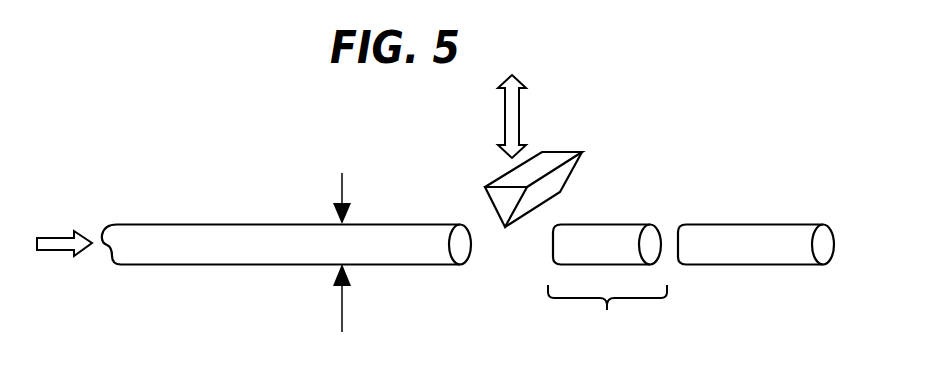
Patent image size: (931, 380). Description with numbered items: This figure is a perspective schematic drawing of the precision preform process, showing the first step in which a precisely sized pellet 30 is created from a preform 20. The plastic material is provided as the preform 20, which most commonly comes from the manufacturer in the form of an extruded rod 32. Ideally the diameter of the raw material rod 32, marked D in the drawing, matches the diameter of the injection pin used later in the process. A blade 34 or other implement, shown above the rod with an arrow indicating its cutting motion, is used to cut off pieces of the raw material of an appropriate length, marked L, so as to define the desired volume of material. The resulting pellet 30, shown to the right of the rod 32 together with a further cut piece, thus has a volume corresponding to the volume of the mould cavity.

The preform 20 is at (376, 135).
The extruded rod 32 is at (215, 252).
The blade 34 is at (558, 175).
The pellet 30 is at (691, 284).